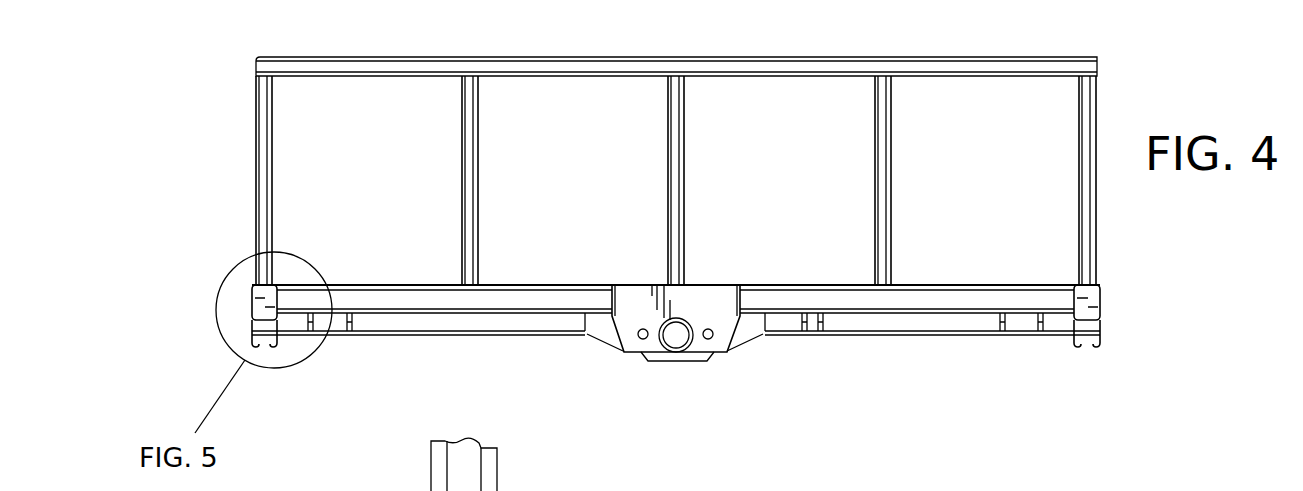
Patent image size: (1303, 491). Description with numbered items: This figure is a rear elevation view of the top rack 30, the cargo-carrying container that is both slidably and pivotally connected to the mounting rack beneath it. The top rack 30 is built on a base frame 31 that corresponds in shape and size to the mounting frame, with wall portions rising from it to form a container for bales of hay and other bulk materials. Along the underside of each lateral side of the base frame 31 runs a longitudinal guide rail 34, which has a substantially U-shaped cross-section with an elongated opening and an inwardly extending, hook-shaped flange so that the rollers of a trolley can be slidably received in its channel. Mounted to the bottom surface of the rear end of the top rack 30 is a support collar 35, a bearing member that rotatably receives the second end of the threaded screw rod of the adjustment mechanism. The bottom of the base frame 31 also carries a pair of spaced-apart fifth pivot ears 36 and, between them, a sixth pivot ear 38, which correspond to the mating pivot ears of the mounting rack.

The top rack 30 is at (238, 158).
The base frame 31 is at (1100, 291).
The guide rail 34 is at (1100, 340).
The support collar 35 is at (660, 354).
The fifth pivot ear 36 is at (1042, 335).
The sixth pivot ear 38 is at (824, 325).